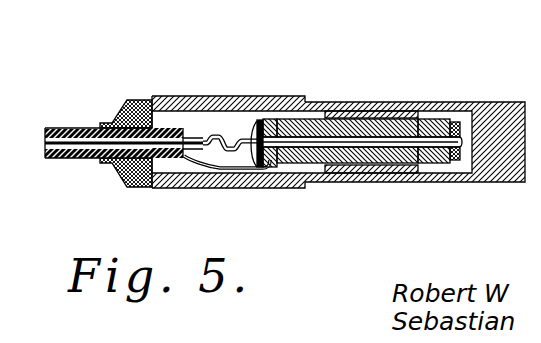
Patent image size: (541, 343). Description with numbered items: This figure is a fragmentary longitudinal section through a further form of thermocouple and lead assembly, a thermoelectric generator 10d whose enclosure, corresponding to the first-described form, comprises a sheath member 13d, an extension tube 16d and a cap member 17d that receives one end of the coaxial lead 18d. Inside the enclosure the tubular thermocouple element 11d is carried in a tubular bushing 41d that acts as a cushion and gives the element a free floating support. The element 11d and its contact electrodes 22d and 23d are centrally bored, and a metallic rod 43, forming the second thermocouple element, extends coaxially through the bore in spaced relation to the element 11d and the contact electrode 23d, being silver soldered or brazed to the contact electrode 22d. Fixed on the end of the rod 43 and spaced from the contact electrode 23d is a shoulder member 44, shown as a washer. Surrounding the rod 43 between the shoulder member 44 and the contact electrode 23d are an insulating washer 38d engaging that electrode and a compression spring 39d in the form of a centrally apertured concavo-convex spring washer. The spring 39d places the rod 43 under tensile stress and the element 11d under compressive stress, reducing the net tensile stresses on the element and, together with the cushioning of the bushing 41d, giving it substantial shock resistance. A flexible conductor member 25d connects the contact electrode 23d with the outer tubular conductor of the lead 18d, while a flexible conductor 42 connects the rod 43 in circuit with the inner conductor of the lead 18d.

The connector body 10d is at (191, 90).
The thermocouple element 11d is at (438, 121).
The outer shell 13d is at (403, 101).
The body lower wall 16d is at (195, 182).
The ferrule 17d is at (137, 177).
The lead 18d is at (97, 160).
The contact electrode 22d is at (457, 161).
The contact electrode 23d is at (272, 165).
The flexible conductor member 25d is at (213, 170).
The insulating washer 38d is at (270, 118).
The compression spring 39d is at (259, 119).
The tubular bushing 41d is at (352, 168).
The flexible conductor 42 is at (216, 135).
The metallic rod 43 is at (336, 142).
The shoulder member 44 is at (254, 145).